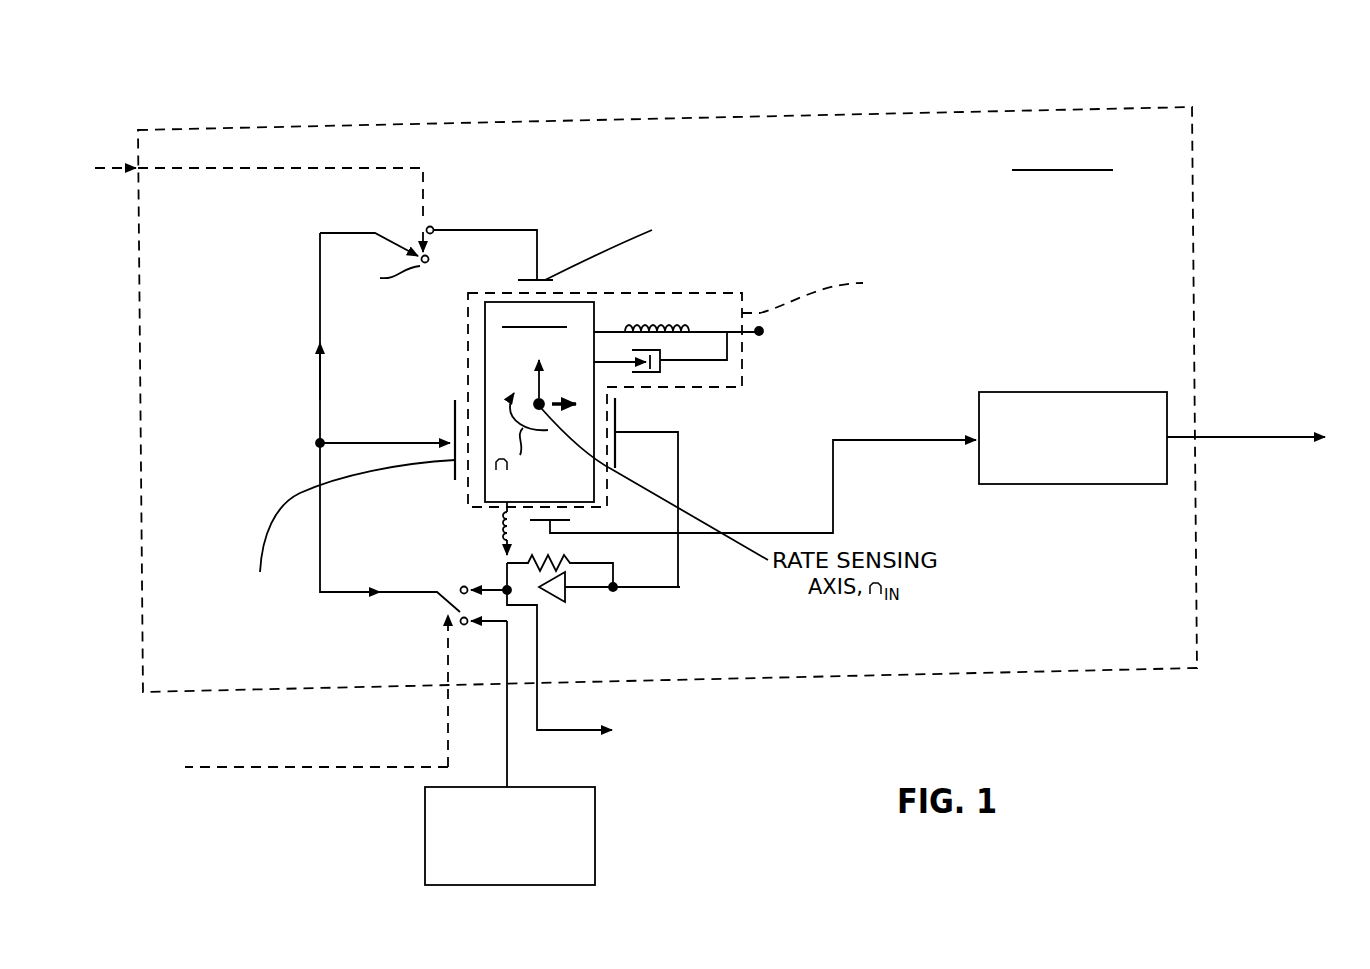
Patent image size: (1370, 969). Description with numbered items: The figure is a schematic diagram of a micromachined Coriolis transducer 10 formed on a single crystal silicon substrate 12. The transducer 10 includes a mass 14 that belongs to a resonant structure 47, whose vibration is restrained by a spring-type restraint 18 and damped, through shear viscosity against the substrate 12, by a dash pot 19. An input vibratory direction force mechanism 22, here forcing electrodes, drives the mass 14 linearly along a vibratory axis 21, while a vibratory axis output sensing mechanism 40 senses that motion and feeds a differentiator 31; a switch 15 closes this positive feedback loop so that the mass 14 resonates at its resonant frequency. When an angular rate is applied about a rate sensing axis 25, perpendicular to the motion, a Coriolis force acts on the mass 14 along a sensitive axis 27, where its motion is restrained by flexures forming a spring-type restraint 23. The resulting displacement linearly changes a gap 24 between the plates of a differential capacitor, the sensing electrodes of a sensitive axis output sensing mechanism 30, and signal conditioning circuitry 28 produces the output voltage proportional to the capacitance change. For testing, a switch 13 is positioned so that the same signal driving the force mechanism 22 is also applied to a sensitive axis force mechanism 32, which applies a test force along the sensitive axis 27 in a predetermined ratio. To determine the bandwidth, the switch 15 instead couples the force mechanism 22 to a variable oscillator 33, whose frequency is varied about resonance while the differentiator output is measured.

The Coriolis transducer 10 is at (1248, 66).
The substrate 12 is at (1193, 163).
The switch 13 is at (415, 250).
The mass 14 is at (485, 338).
The switch 15 is at (453, 602).
The spring-type restraint 18 is at (667, 320).
The dash pot 19 is at (660, 370).
The vibratory axis 21 is at (560, 413).
The input vibratory direction force mechanism 22 is at (445, 427).
The spring-type restraint 23 is at (503, 527).
The gap 24 is at (590, 509).
The rate sensing axis 25 is at (537, 402).
The sensitive axis 27 is at (537, 373).
The signal conditioning circuitry 28 is at (1075, 392).
The sensitive axis output sensing mechanism 30 is at (566, 528).
The differentiator 31 is at (581, 621).
The sensitive axis force mechanism 32 is at (552, 254).
The variable oscillator 33 is at (597, 828).
The vibratory axis output sensing mechanism 40 is at (627, 421).
The resonant structure 47 is at (881, 290).